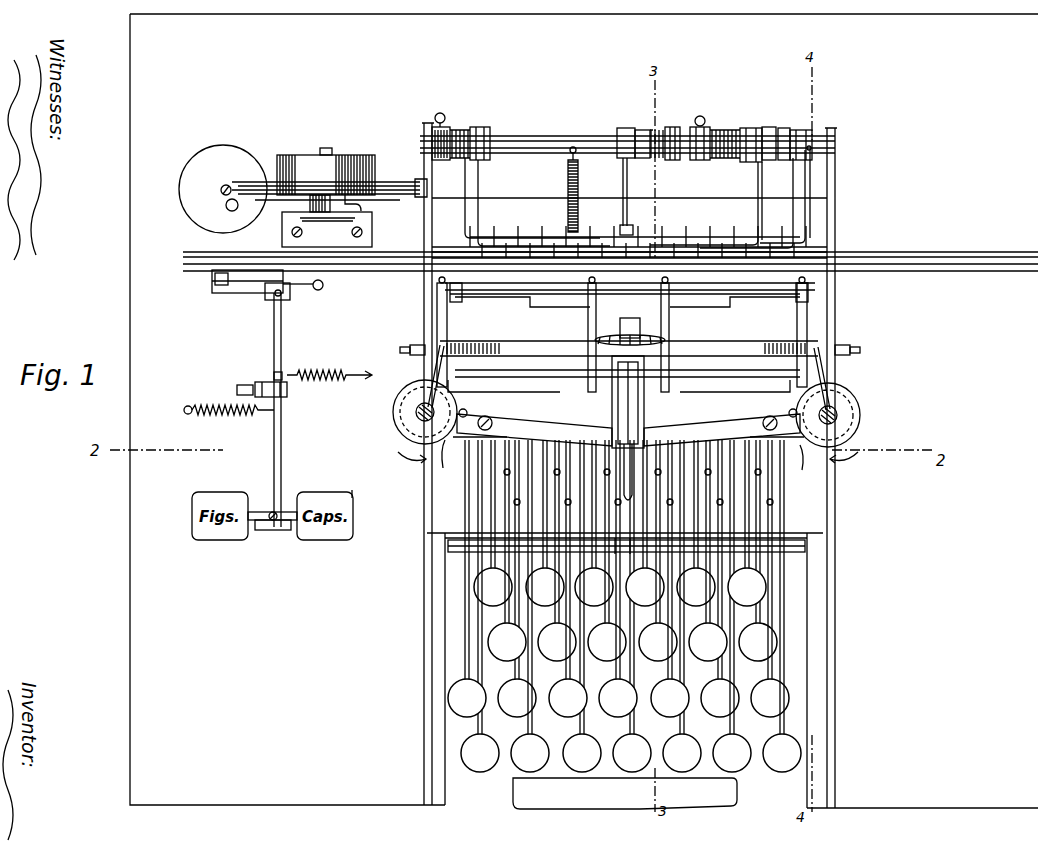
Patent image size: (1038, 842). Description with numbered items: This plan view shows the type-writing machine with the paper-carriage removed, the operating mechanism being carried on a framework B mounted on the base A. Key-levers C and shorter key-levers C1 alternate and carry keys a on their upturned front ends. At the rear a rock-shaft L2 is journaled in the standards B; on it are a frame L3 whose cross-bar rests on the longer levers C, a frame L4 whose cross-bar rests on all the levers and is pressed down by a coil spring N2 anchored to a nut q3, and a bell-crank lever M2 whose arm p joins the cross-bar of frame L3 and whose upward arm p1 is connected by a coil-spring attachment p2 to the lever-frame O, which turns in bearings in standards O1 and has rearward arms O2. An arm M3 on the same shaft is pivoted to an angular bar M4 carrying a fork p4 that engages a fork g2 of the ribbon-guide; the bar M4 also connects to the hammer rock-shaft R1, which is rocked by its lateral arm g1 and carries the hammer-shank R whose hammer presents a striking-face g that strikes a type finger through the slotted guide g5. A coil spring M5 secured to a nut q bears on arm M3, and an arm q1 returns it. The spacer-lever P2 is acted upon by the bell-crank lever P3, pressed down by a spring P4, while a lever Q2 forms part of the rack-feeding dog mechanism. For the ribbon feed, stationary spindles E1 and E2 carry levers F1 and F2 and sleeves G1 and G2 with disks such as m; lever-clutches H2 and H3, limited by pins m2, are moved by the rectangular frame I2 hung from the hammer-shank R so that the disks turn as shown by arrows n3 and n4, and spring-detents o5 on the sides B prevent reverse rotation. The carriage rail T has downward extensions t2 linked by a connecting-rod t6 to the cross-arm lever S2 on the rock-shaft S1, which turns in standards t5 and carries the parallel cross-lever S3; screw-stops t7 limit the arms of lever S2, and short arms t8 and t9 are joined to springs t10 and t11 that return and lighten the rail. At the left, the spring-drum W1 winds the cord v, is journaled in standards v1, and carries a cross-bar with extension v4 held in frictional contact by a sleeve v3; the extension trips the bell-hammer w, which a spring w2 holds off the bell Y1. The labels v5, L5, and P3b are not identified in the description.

The base A is at (584, 411).
The framework B is at (424, 298).
The rail T is at (610, 251).
The bell Y1 is at (223, 189).
The bell hammer w is at (226, 207).
The spring w2 is at (276, 202).
The cord v is at (420, 190).
The spring-drum W1 is at (326, 175).
The vertical standards v1 is at (334, 152).
The sleeve v3 is at (320, 203).
The forward extension v4 is at (363, 203).
The feed bracket v5 is at (327, 229).
The downward extensions t2 is at (190, 268).
The connecting-rod t6 is at (212, 286).
The adjustable screw-stops t7 is at (225, 293).
The cross-arm lever S2 is at (266, 296).
The rock-shaft S1 is at (263, 410).
The standards t5 is at (288, 300).
The short arm t9 is at (283, 375).
The coil tension-spring t11 is at (329, 362).
The short arm t8 is at (283, 413).
The coil tension-spring t10 is at (229, 422).
The cross-arm lever S3 is at (287, 528).
The rock-shaft L2 is at (545, 137).
The nut q3 is at (439, 114).
The coil tension-spring N2 is at (461, 128).
The frame L4 is at (463, 222).
The rectangular frame L3 is at (505, 222).
The frame rod L5 is at (790, 196).
The bell-crank lever P3 is at (619, 136).
The spacer-lever P2 is at (620, 226).
The coil tension-spring P4 is at (625, 463).
The lateral arm p is at (558, 215).
The nut q is at (706, 128).
The coil-spring M5 is at (735, 128).
The upwardly-extending arm M3 is at (754, 164).
The angular bar M4 is at (756, 196).
The lever Q2 is at (768, 127).
The arm q1 is at (785, 127).
The bell-crank lever M2 is at (567, 172).
The upwardly-extending arm p1 is at (579, 186).
The coil-spring attachment p2 is at (579, 212).
The lever-frame O is at (420, 368).
The spring-detents o5 is at (412, 352).
The rectangular frame I2 is at (630, 383).
The hammer-shank R is at (640, 412).
The striking-face g is at (634, 460).
The rock-shaft R1 is at (624, 488).
The lever-clutch H2 is at (532, 425).
The lever-clutch H3 is at (724, 425).
The pins m2 is at (494, 410).
The spindle E1 is at (415, 414).
The sleeve G1 is at (420, 410).
The disk m is at (630, 434).
The arrow n3 is at (402, 456).
The spindle E2 is at (840, 416).
The sleeve G2 is at (840, 410).
The vertical standards O1 is at (562, 392).
The arrow n4 is at (856, 451).
The lever F1 is at (440, 462).
The lever F2 is at (803, 467).
The forks g2 is at (508, 340).
The slotted arm g5 is at (545, 338).
The parallel arms O2 is at (703, 340).
The fork p4 is at (754, 344).
The lateral arm g1 is at (774, 344).
The pawl P3b is at (769, 387).
The key-levers C is at (778, 240).
The key-levers C1 is at (770, 568).
The keys a is at (624, 606).